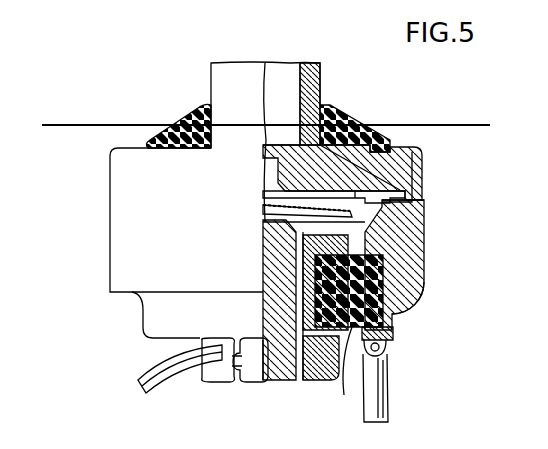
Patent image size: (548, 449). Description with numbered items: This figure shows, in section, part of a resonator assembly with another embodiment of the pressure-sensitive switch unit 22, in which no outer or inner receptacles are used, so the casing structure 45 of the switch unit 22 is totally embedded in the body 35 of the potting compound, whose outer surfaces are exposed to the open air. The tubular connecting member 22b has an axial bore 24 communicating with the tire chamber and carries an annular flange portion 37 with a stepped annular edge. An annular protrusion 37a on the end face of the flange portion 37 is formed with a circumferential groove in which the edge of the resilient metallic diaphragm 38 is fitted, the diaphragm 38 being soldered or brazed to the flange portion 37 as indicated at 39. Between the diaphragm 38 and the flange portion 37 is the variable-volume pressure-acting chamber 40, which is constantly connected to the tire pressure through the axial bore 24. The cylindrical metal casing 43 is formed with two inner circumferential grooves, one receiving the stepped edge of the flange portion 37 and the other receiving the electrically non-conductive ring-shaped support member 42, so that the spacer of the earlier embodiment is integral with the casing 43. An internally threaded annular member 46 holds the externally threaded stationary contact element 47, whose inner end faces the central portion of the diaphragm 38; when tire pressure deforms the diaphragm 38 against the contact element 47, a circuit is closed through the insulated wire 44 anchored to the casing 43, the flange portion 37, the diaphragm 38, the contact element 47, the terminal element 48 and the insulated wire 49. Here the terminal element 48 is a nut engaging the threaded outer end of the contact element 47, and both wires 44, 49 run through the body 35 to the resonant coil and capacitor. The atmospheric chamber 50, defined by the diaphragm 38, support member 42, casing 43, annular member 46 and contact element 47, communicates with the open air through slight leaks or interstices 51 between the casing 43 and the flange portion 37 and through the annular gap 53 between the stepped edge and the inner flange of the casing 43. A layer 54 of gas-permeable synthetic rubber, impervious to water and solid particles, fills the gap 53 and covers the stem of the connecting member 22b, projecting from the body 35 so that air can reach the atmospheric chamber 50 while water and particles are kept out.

The pressure-sensitive switch unit 22 is at (410, 116).
The tubular connecting member 22b is at (322, 82).
The axial bore 24 is at (300, 90).
The body of potting compound 35 is at (80, 130).
The annular flange portion 37 is at (412, 150).
The annular protrusion 37a is at (390, 200).
The metallic diaphragm 38 is at (343, 290).
The solder or braze joint 39 is at (352, 192).
The pressure-acting chamber 40 is at (262, 204).
The support member 42 is at (385, 322).
The metal casing 43 is at (418, 287).
The insulated wire 44 is at (388, 402).
The casing structure 45 is at (100, 270).
The internally threaded annular member 46 is at (341, 373).
The stationary contact element 47 is at (285, 381).
The terminal element 48 is at (252, 380).
The insulated wire 49 is at (166, 389).
The atmospheric chamber 50 is at (349, 291).
The leaks or interstices 51 is at (418, 178).
The annular gap 53 is at (378, 135).
The layer of gas-permeable synthetic rubber 54 is at (196, 112).